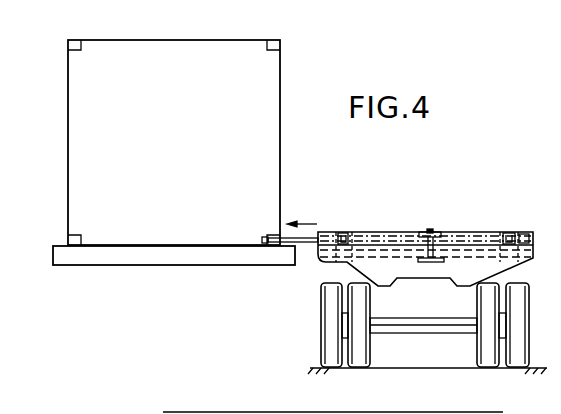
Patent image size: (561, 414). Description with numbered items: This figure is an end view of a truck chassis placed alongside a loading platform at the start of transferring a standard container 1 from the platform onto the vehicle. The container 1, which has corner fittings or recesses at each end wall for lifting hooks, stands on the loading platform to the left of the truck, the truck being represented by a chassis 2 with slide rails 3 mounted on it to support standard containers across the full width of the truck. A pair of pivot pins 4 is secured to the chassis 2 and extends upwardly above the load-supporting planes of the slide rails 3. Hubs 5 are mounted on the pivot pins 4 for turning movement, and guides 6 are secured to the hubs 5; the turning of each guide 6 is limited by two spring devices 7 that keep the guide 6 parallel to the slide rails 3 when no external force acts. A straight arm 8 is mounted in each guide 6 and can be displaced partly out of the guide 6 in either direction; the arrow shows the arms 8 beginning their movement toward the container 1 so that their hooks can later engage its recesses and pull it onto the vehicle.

The standard container 1 is at (166, 50).
The chassis 2 is at (538, 250).
The slide rails 3 is at (536, 260).
The pivot pins 4 is at (447, 233).
The hubs 5 is at (430, 229).
The guides 6 is at (526, 233).
The spring devices 7 is at (341, 232).
The arm 8 is at (262, 237).